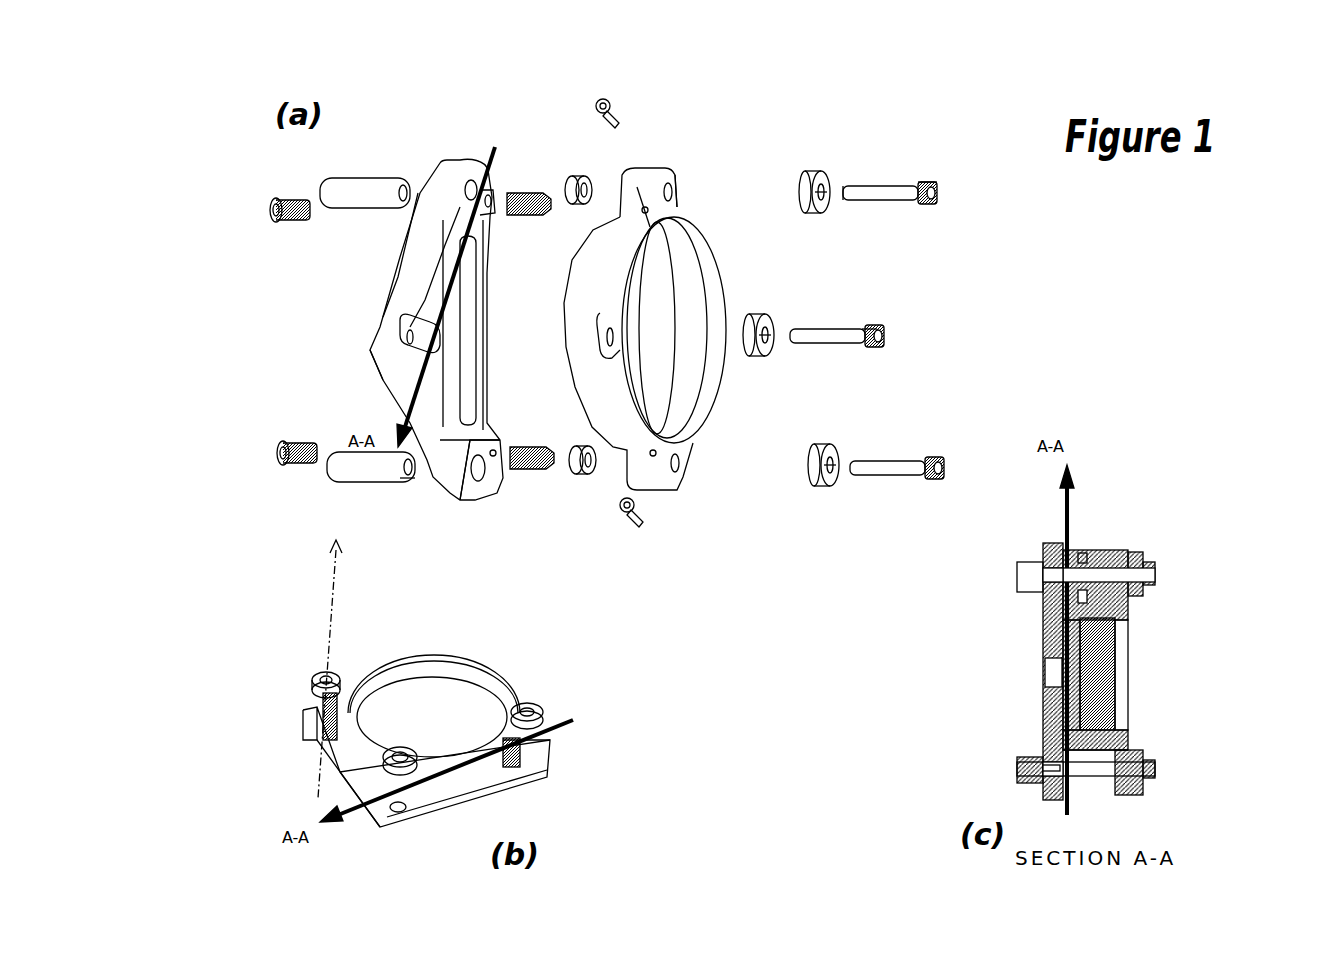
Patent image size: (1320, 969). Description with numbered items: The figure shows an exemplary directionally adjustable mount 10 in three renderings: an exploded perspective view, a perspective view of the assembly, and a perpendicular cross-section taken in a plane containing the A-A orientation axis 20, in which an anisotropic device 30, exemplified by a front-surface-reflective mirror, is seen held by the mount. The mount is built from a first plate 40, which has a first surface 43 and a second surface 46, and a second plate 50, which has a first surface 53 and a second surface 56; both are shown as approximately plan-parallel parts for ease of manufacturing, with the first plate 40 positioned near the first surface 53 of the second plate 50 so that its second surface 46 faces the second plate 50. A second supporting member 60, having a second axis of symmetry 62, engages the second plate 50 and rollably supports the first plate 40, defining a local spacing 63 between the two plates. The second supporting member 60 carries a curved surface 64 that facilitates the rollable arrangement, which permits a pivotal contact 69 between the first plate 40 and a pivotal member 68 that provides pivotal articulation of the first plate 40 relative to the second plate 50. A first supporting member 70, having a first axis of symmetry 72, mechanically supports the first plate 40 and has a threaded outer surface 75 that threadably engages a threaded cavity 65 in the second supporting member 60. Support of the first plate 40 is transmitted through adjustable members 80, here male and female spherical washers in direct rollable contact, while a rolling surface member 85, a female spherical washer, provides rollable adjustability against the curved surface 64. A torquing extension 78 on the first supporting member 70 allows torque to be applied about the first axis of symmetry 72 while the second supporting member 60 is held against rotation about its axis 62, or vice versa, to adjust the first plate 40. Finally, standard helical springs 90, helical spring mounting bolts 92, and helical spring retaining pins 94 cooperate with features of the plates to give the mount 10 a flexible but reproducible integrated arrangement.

The directionally adjustable mount 10 is at (1115, 355).
The orientation axis 20 is at (485, 158).
The anisotropic device 30 is at (1100, 660).
The first plate 40 is at (530, 669).
The first surface of the first plate 43 is at (680, 205).
The second surface of the first plate 46 is at (580, 266).
The second plate 50 is at (451, 479).
The first surface of the second plate 53 is at (482, 432).
The second surface of the second plate 56 is at (400, 280).
The second supporting member 60 is at (318, 177).
The second axis of symmetry 62 is at (421, 196).
The local spacing 63 is at (1080, 757).
The curved surface 64 is at (410, 460).
The threaded cavity 65 is at (1048, 757).
The pivotal member 68 is at (425, 333).
The pivotal contact 69 is at (1080, 563).
The first supporting member 70 is at (880, 460).
The first axis of symmetry 72 is at (887, 340).
The threaded outer surface 75 is at (797, 333).
The torquing extension 78 is at (927, 199).
The adjustable member 80 is at (800, 200).
The rolling surface member 85 is at (556, 180).
The helical spring 90 is at (553, 473).
The helical spring mounting bolt 92 is at (274, 472).
The helical spring retaining pin 94 is at (611, 101).